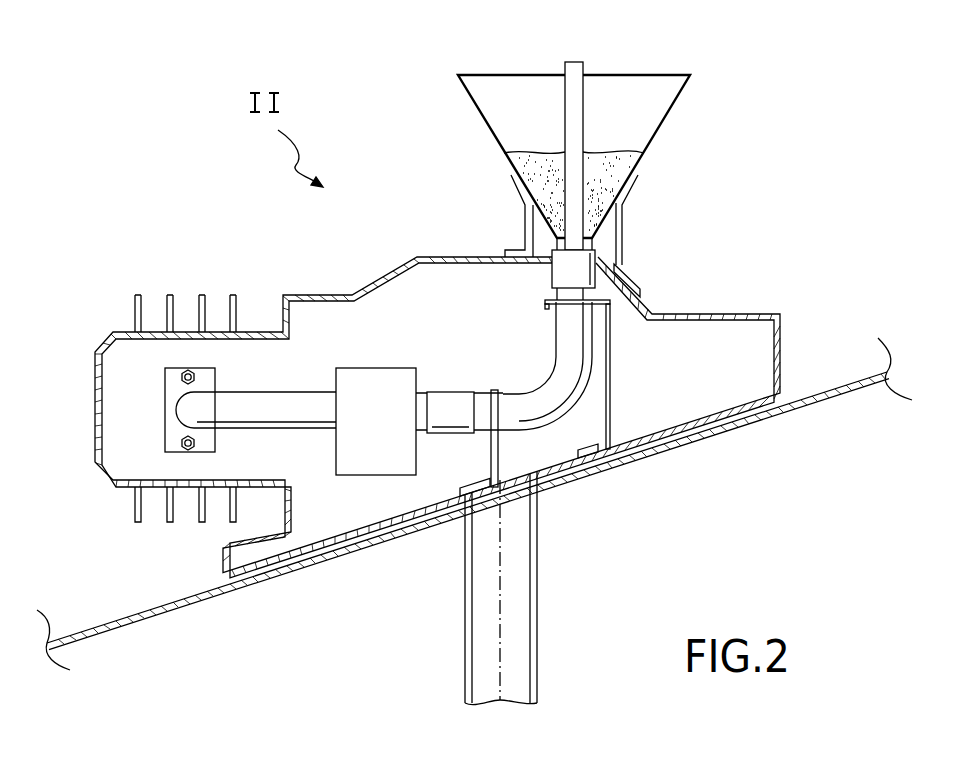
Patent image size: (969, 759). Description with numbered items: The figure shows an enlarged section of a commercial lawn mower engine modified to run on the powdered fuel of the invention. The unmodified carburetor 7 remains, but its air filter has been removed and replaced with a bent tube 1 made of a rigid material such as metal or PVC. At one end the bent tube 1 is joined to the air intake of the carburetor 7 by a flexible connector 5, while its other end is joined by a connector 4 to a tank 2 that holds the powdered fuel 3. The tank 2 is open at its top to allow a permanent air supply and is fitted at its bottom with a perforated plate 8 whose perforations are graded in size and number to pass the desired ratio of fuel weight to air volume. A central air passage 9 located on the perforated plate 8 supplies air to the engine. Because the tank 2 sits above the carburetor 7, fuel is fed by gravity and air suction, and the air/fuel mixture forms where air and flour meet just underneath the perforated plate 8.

The bent tube 1 is at (556, 338).
The tank 2 is at (669, 119).
The powdered fuel 3 is at (603, 181).
The connector 4 is at (552, 271).
The connector 5 is at (452, 392).
The carburetor 7 is at (375, 377).
The perforated plate 8 is at (578, 236).
The air passage 9 is at (574, 107).